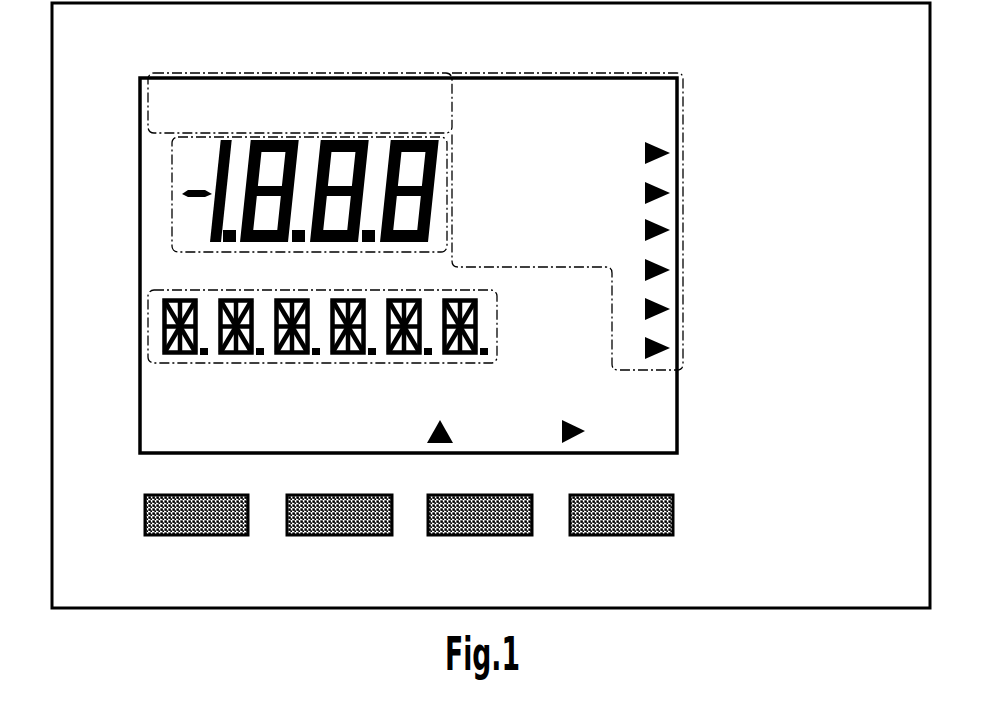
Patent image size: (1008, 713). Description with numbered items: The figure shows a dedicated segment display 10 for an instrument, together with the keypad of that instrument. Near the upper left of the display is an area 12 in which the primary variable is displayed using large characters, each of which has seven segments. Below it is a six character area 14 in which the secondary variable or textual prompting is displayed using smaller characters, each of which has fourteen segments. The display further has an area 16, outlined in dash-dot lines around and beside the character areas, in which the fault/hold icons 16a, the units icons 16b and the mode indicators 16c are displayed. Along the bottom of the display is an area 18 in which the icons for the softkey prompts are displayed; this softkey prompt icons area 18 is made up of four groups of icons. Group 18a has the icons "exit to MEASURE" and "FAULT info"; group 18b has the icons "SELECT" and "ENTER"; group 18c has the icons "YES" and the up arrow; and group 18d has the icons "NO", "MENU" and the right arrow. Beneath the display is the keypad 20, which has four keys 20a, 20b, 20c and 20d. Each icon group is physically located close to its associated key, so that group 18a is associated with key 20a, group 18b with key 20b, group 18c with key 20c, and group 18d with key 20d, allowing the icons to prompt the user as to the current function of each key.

The dedicated segment display 10 is at (408, 244).
The primary variable area 12 is at (269, 194).
The six character area 14 is at (289, 326).
The icon area 16 is at (461, 224).
The fault/hold icons 16a is at (370, 89).
The units icons 16b is at (567, 201).
The mode indicators 16c is at (730, 278).
The softkey prompt icons area 18 is at (422, 414).
The first icon group 18a is at (179, 420).
The second icon group 18b is at (342, 434).
The third icon group 18c is at (500, 391).
The fourth icon group 18d is at (662, 438).
The keypad 20 is at (414, 541).
The first key 20a is at (196, 537).
The second key 20b is at (339, 541).
The third key 20c is at (480, 537).
The fourth key 20d is at (626, 537).